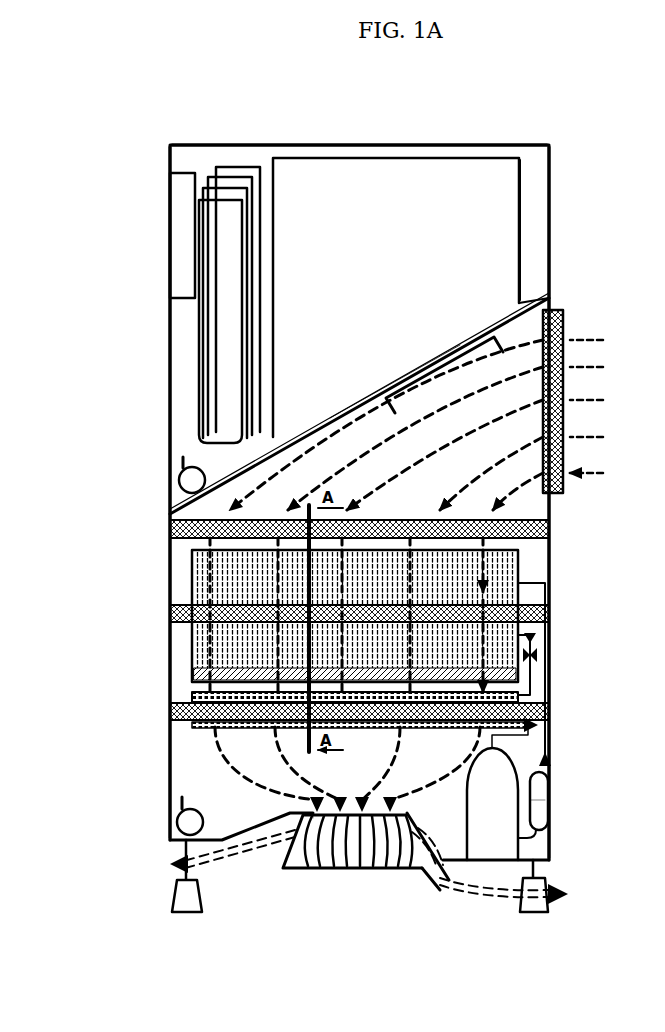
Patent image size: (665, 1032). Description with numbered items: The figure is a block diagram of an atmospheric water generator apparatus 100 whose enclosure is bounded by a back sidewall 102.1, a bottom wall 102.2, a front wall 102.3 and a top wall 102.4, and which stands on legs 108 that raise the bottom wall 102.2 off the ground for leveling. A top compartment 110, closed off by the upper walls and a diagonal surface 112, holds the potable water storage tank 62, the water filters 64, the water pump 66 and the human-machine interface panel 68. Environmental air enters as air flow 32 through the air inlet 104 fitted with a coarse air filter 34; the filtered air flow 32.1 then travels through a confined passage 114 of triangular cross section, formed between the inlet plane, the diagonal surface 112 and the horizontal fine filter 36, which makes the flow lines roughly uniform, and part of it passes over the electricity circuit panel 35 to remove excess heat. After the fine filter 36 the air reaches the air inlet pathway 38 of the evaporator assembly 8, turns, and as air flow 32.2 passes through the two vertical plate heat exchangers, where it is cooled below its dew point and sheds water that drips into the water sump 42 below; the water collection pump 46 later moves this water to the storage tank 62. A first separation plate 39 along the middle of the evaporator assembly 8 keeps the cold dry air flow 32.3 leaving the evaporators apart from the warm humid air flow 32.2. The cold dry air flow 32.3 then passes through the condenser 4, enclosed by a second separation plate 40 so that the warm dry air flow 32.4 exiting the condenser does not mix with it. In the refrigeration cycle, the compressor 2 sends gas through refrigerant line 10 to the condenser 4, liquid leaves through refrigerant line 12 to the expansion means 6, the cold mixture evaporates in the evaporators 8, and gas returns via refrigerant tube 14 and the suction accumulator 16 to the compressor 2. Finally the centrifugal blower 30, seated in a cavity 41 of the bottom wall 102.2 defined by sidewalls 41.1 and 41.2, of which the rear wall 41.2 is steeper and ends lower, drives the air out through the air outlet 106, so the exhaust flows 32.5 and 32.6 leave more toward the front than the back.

The AWG apparatus 100 is at (115, 250).
The back sidewall 102.1 is at (557, 168).
The bottom wall 102.2 is at (455, 882).
The front wall 102.3 is at (174, 372).
The top wall 102.4 is at (336, 147).
The top compartment 110 is at (540, 212).
The human-machine interface panel 68 is at (178, 192).
The water filters 64 is at (241, 200).
The potable water storage tank 62 is at (408, 158).
The air flow 32.1 is at (292, 492).
The diagonal surface 112 is at (553, 302).
The electricity circuit panel 35 is at (470, 352).
The confined passage 114 is at (372, 440).
The water pump 66 is at (178, 484).
The coarse air filter 34 is at (566, 320).
The environment air inlet 104 is at (585, 318).
The air flow 32 is at (595, 400).
The fine filter 36 is at (565, 520).
The air inlet pathway 38 is at (207, 546).
The evaporator assembly 8 is at (520, 567).
The air flow 32.2 is at (207, 568).
The first separation plate 39 is at (551, 612).
The air flow 32.3 is at (207, 640).
The water sump 42 is at (207, 680).
The condenser 4 is at (192, 697).
The second separation plate 40 is at (192, 712).
The air flow 32.4 is at (275, 775).
The refrigerant tube 14 is at (546, 640).
The refrigerant line 12 is at (540, 694).
The evaporator expansion means 6 is at (542, 655).
The refrigerant line 10 is at (545, 778).
The suction accumulator 16 is at (550, 818).
The compressor 2 is at (553, 802).
The blower 30 is at (350, 870).
The air outlet 106 is at (405, 870).
The cavity 41 is at (291, 827).
The cavity sidewall 41.1 is at (270, 822).
The cavity sidewall 41.2 is at (440, 832).
The water collection pump 46 is at (177, 820).
The air flow 32.5 is at (172, 860).
The air flow 32.6 is at (556, 886).
The legs 108 is at (176, 900).